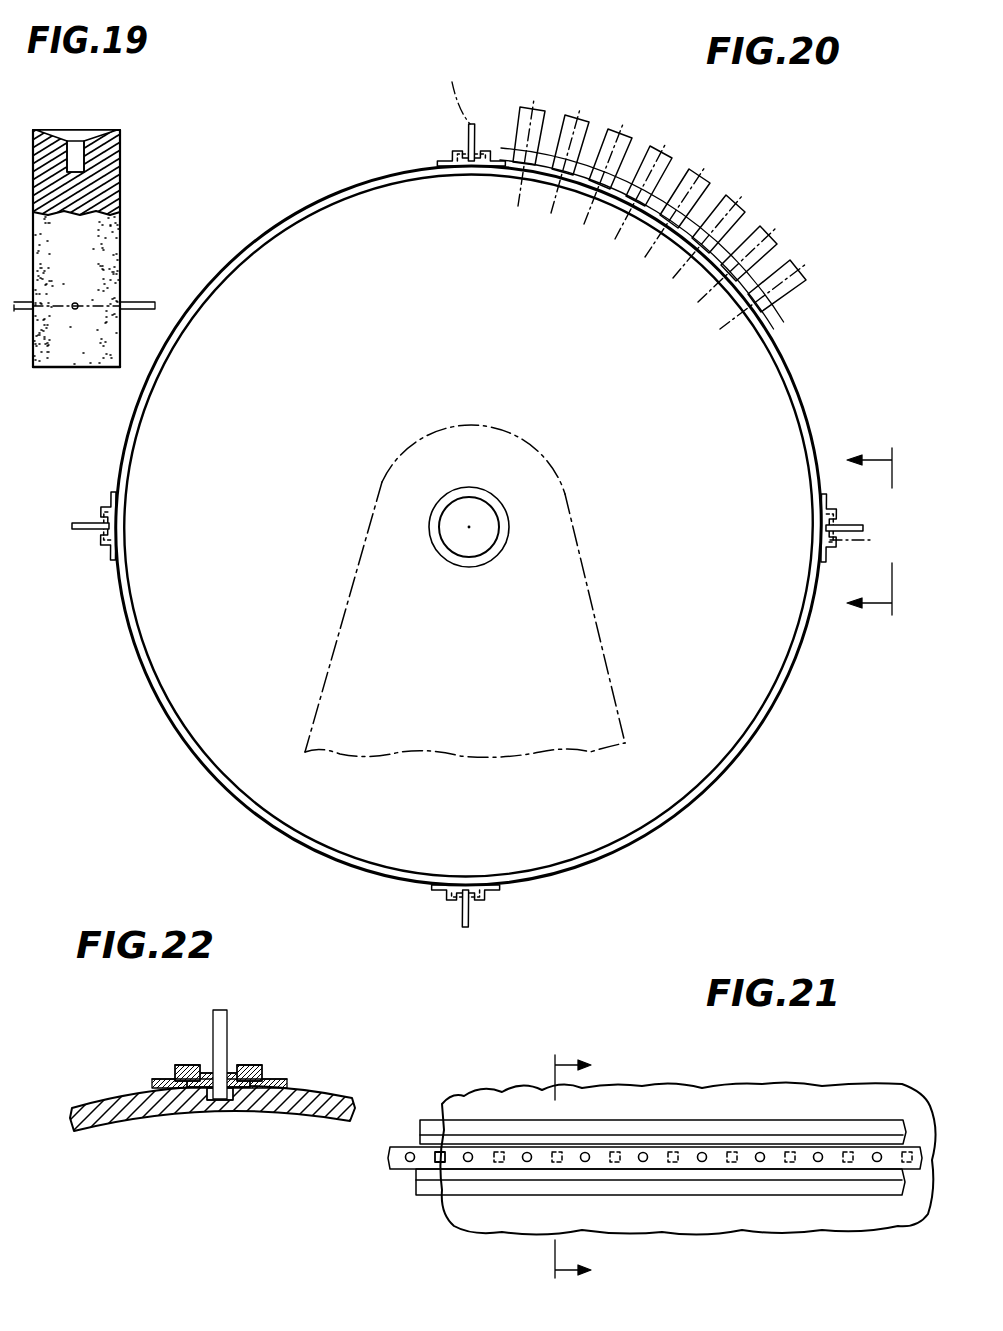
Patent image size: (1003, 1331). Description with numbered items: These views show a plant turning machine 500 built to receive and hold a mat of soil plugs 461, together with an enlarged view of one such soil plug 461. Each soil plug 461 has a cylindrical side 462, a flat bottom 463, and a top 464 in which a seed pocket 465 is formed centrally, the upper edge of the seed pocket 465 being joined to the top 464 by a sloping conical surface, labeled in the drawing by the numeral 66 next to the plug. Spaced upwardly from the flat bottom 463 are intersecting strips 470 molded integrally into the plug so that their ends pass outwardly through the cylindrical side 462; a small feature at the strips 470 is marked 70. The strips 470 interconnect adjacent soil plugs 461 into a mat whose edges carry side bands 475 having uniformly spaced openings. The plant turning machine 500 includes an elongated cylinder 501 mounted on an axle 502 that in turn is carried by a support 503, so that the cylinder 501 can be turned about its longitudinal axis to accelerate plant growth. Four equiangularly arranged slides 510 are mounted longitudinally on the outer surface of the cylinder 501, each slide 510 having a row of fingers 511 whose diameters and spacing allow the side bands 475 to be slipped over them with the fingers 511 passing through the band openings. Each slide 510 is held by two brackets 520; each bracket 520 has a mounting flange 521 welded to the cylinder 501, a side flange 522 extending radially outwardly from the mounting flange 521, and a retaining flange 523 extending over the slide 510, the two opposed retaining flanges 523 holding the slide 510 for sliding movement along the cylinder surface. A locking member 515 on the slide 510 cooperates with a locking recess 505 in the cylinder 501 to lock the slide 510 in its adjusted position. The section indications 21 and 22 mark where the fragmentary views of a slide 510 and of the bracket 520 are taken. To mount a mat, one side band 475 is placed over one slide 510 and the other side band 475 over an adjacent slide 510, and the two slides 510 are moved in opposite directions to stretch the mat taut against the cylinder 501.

In FIG. 19, the funnel opening 66 is at (56, 136).
In FIG. 19, the seed pocket 465 is at (76, 144).
In FIG. 19, the top 464 is at (118, 130).
In FIG. 19, the cylindrical side 462 is at (122, 170).
In FIG. 19, the soil plug 461 is at (124, 224).
In FIG. 20, the soil plug 461 is at (658, 142).
In FIG. 19, the strips 470 is at (150, 302).
In FIG. 20, the strips 470 is at (500, 146).
In FIG. 19, the pivot 70 is at (75, 310).
In FIG. 19, the flat bottom 463 is at (66, 368).
In FIG. 20, the plant turning machine 500 is at (400, 48).
In FIG. 20, the cylinder 501 is at (356, 178).
In FIG. 22, the cylinder 501 is at (120, 1122).
In FIG. 21, the cylinder 501 is at (660, 1104).
In FIG. 20, the axle 502 is at (480, 492).
In FIG. 20, the support 503 is at (574, 518).
In FIG. 20, the slides 510 is at (470, 168).
In FIG. 22, the slides 510 is at (232, 1072).
In FIG. 21, the slides 510 is at (918, 1106).
In FIG. 20, the fingers 511 is at (472, 124).
In FIG. 22, the fingers 511 is at (228, 1018).
In FIG. 21, the fingers 511 is at (640, 1162).
In FIG. 21, the locking member 515 is at (440, 1150).
In FIG. 20, the brackets 520 is at (440, 160).
In FIG. 22, the brackets 520 is at (156, 1064).
In FIG. 21, the brackets 520 is at (726, 1134).
In FIG. 22, the mounting flange 521 is at (152, 1084).
In FIG. 22, the clamp 522 is at (176, 1064).
In FIG. 22, the retaining flange 523 is at (192, 1064).
In FIG. 22, the locking recess 505 is at (218, 1100).
In FIG. 21, the locking recess 505 is at (498, 1164).
In FIG. 20, the side bands 475 is at (678, 307).
In FIG. 20, the section line 21 is at (891, 532).
In FIG. 21, the section line 22 is at (551, 1166).